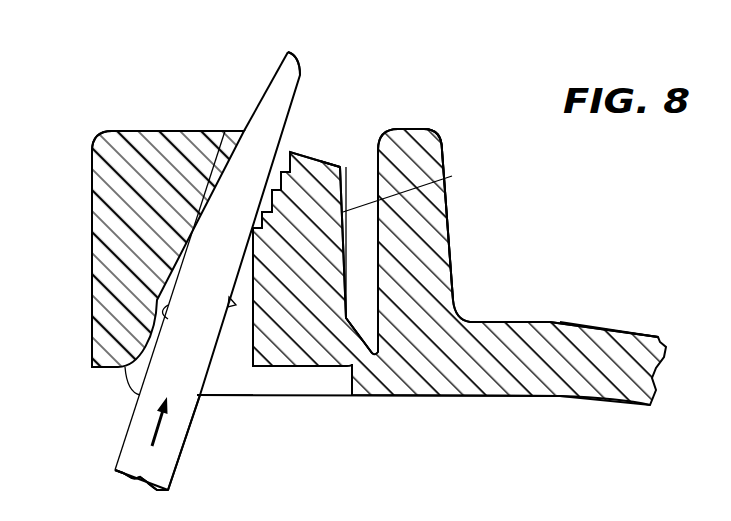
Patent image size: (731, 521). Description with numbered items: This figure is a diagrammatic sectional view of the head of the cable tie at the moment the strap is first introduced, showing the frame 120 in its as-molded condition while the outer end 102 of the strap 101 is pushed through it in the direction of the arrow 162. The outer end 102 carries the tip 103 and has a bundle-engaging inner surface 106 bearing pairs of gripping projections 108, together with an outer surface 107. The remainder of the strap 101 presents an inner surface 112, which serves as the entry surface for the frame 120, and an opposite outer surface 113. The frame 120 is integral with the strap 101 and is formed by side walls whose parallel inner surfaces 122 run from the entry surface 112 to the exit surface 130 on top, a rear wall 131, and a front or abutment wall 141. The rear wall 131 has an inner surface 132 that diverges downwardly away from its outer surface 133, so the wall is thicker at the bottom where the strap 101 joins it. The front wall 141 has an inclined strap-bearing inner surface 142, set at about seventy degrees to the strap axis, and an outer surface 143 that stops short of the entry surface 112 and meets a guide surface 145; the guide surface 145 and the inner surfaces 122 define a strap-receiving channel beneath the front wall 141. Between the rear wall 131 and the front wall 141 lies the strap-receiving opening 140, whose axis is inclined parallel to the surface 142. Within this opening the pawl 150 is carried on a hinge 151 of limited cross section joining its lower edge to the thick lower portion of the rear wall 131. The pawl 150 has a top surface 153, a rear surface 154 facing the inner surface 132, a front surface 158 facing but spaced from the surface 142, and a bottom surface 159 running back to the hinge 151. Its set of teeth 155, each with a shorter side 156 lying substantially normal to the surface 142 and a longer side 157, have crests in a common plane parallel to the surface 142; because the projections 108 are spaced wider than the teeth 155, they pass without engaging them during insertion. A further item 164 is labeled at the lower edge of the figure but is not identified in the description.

The strap 101 is at (125, 477).
The outer end 102 is at (180, 357).
The tip 103 is at (293, 75).
The inner or bundle-engaging surface 106 is at (184, 447).
The outer surface 107 is at (122, 457).
The gripping projections 108 is at (200, 398).
The inner or bundle-engaging surface 112 is at (405, 396).
The outer surface 113 is at (542, 322).
The frame 120 is at (99, 136).
The inner surfaces 122 is at (378, 180).
The exit surface 130 is at (170, 130).
The rear wall 131 is at (430, 226).
The inner surface 132 is at (437, 141).
The outer surface 133 is at (452, 244).
The strap-receiving opening 140 is at (118, 382).
The front wall 141 is at (128, 184).
The inner surface 142 is at (160, 313).
The outer surface 143 is at (92, 221).
The guide surface 145 is at (122, 367).
The pawl 150 is at (368, 155).
The hinge 151 is at (360, 358).
The top surface 153 is at (338, 163).
The rear surface 154 is at (452, 176).
The teeth 155 is at (293, 152).
The shorter side 156 is at (283, 172).
The longer side 157 is at (262, 222).
The front surface 158 is at (252, 334).
The bottom surface 159 is at (286, 364).
The arrow 162 is at (152, 424).
The lower element 164 is at (366, 516).